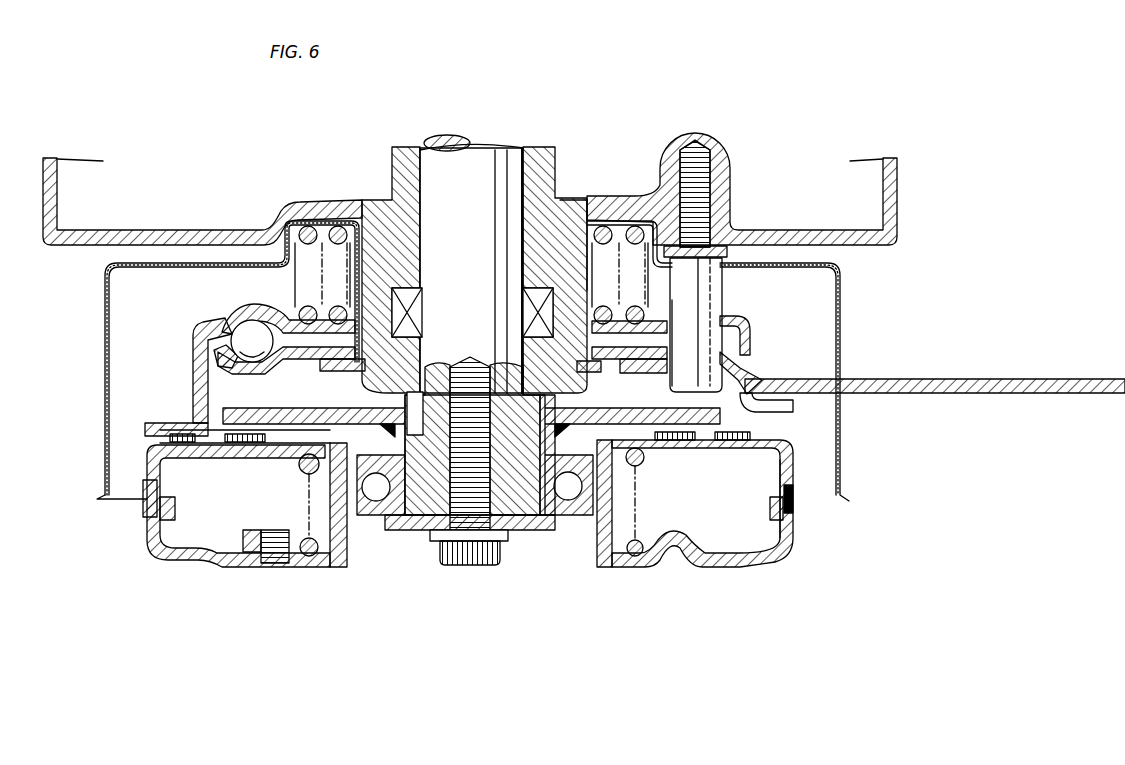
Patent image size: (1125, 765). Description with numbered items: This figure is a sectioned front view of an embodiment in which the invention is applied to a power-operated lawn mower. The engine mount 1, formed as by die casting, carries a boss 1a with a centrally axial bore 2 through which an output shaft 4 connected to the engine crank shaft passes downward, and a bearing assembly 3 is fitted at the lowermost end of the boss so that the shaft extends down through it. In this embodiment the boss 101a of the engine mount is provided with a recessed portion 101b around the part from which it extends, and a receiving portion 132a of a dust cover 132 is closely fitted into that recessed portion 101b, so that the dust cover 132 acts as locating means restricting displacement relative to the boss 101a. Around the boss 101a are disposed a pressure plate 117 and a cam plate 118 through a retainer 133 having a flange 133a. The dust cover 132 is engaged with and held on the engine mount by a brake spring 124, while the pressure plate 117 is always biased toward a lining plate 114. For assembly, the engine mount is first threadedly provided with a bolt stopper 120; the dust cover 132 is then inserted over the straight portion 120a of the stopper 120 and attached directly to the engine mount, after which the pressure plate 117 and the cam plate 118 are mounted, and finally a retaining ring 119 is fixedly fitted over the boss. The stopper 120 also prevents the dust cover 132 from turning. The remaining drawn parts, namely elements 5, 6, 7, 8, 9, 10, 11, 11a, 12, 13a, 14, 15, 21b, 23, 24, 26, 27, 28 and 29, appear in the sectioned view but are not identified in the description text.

The engine mount 1 is at (388, 180).
The boss 1a is at (567, 290).
The axial bore 2 is at (486, 148).
The bearing assembly 3 is at (425, 311).
The output shaft 4 is at (652, 378).
The sleeve 5 is at (548, 437).
The hub nut 6 is at (432, 455).
The bearing 7 is at (592, 505).
The bottom plate 8 is at (535, 531).
The bolt 9 is at (456, 566).
The nut 10 is at (432, 534).
The lower housing 11 is at (720, 567).
The lower housing wall 11a is at (790, 525).
The screw 12 is at (273, 563).
The tab 13a is at (795, 505).
The ball 14 is at (643, 459).
The pad 15 is at (246, 443).
The adjusting screw 21b is at (683, 180).
The arm 23 is at (1000, 379).
The lever 24 is at (668, 366).
The lever 26 is at (233, 343).
The ball 27 is at (237, 326).
The pivot arm 28 is at (258, 335).
The pad 29 is at (184, 443).
The boss 101a is at (433, 138).
The recessed portion 101b is at (640, 228).
The lining plate 114 is at (736, 446).
The pressure plate 117 is at (196, 340).
The cam plate 118 is at (300, 364).
The retaining ring 119 is at (590, 372).
The bolt stopper 120 is at (726, 292).
The straight portion 120a is at (702, 308).
The brake spring 124 is at (308, 226).
The dust cover 132 is at (842, 332).
The receiving portion 132a is at (342, 218).
The retainer 133 is at (598, 343).
The flange 133a is at (340, 371).